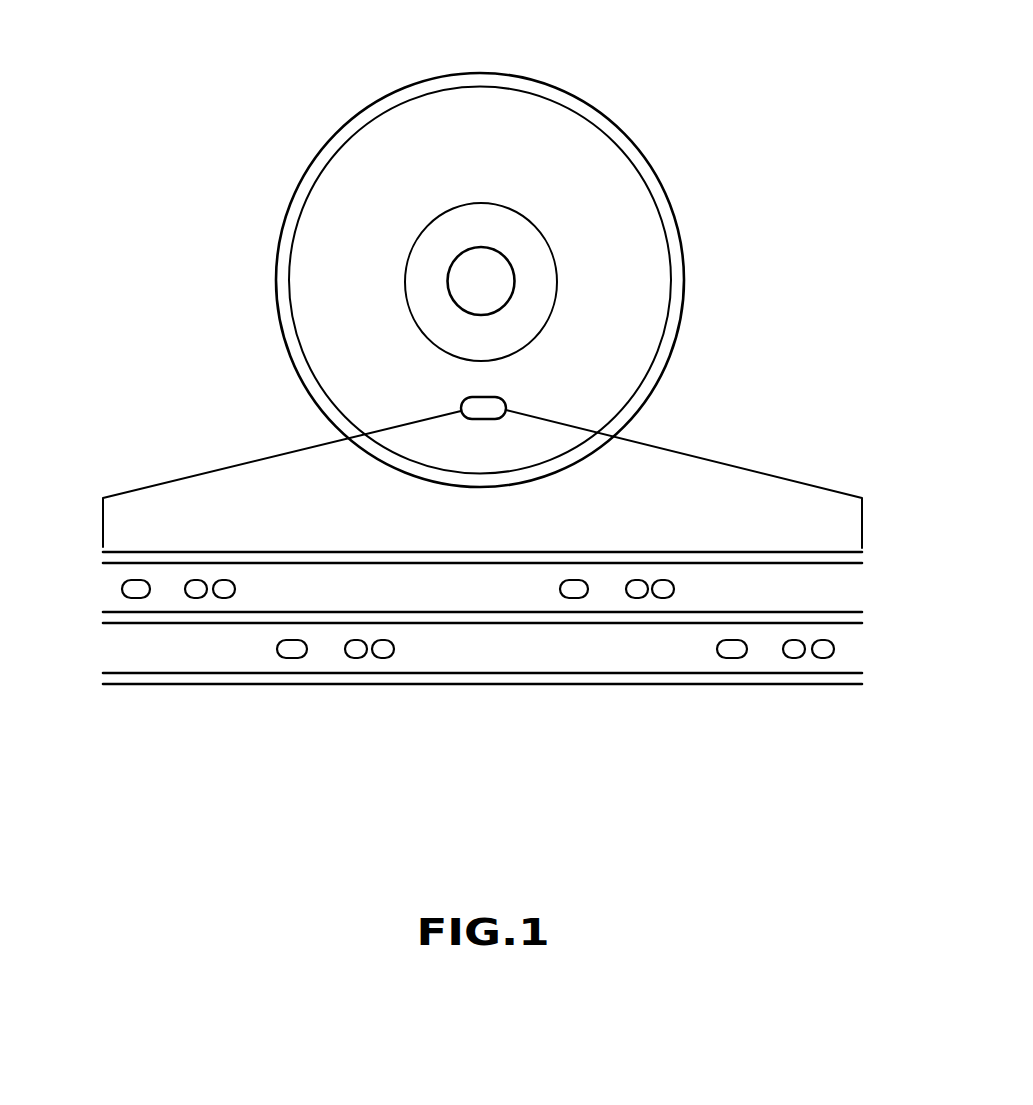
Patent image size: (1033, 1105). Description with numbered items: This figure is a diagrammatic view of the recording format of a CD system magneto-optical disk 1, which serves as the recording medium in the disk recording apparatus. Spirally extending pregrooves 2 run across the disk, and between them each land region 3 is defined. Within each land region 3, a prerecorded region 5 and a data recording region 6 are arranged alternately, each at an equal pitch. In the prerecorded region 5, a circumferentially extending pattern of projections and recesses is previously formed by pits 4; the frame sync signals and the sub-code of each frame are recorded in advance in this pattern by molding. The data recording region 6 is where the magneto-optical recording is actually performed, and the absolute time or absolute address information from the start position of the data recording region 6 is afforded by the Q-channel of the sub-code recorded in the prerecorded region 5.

The magneto-optical disk 1 is at (665, 168).
The pregrooves 2 is at (853, 677).
The land region 3 is at (127, 663).
The pits 4 is at (664, 586).
The prerecorded region 5 is at (138, 507).
The data recording region 6 is at (385, 587).